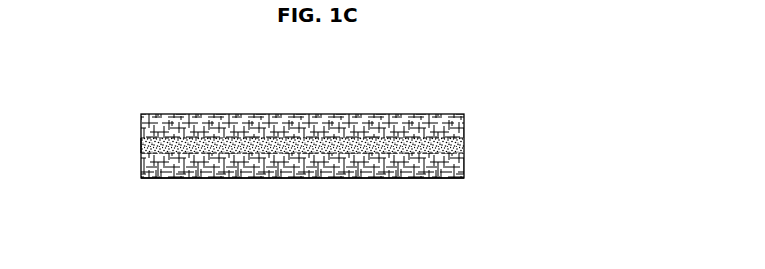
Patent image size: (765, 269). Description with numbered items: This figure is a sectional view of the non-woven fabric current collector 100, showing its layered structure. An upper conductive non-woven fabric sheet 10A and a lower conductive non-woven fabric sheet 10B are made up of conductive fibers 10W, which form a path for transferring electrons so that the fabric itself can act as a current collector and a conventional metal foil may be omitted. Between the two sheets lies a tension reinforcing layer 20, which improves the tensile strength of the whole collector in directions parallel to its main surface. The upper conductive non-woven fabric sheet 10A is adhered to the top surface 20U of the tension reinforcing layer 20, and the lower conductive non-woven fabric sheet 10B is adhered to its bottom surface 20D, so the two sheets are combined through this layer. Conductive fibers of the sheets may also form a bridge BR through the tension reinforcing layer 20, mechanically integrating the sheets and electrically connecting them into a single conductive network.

The non-woven fabric current collector 100 is at (334, 96).
The upper conductive non-woven fabric sheet 10A is at (466, 121).
The lower conductive non-woven fabric sheet 10B is at (466, 165).
The tension reinforcing layer 20 is at (466, 146).
The top surface of the tension reinforcing layer 20U is at (422, 138).
The bottom surface of the tension reinforcing layer 20D is at (425, 154).
The conductive fibers 10W is at (300, 178).
The bridge BR is at (141, 146).